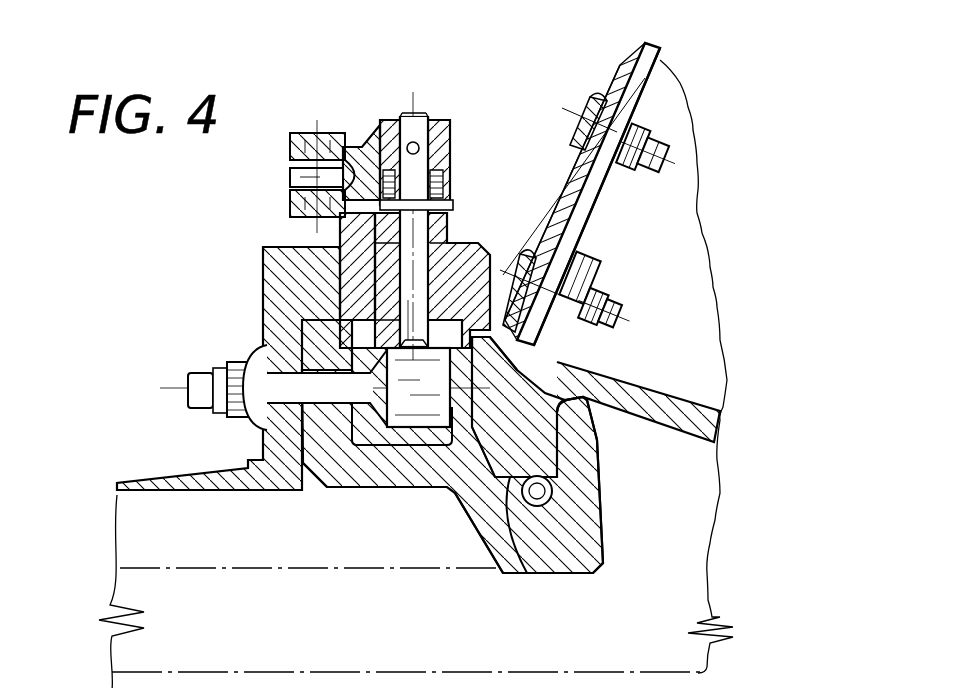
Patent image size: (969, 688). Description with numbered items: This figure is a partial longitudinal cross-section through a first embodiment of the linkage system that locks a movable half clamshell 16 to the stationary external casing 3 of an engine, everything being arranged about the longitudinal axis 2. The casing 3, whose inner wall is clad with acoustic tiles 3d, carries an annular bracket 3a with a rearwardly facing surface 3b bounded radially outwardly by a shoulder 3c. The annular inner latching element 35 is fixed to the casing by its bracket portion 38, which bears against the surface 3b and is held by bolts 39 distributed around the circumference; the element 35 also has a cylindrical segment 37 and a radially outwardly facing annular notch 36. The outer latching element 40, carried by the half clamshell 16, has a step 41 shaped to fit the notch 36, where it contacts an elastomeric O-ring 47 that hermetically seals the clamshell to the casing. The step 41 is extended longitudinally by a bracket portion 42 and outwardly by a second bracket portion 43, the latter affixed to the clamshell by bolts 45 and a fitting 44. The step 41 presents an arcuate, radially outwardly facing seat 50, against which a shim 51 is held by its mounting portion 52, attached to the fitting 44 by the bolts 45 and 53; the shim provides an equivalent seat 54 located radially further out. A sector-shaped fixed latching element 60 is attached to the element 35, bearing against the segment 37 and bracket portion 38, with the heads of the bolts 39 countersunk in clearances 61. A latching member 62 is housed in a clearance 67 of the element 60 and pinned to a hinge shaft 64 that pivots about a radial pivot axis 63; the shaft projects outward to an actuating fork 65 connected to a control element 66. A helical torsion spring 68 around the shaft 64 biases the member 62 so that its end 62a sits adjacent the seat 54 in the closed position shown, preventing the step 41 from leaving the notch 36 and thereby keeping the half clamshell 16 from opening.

The longitudinal axis 2 is at (380, 672).
The external casing 3 is at (172, 483).
The annular bracket 3a is at (272, 300).
The rearwardly facing surface 3b is at (310, 492).
The shoulder 3c is at (306, 330).
The acoustic tiles 3d is at (226, 572).
The half clamshell 16 is at (714, 224).
The inner latching element 35 is at (531, 100).
The annular notch 36 is at (525, 573).
The cylindrical segment 37 is at (450, 478).
The bracket portion 38 is at (333, 432).
The bolts 39 is at (188, 380).
The outer latching element 40 is at (701, 320).
The step 41 is at (560, 455).
The bracket portion 42 is at (703, 430).
The second bracket portion 43 is at (585, 268).
The fitting 44 is at (606, 180).
The bolts 45 is at (610, 303).
The elastomeric O-ring 47 is at (553, 492).
The seat 50 is at (548, 444).
The shim 51 is at (497, 400).
The mounting portion 52 is at (622, 80).
The bolts 53 is at (632, 160).
The seat 54 is at (517, 345).
The fixed latching element 60 is at (345, 265).
The clearances 61 is at (420, 412).
The latching member 62 is at (470, 243).
The end 62a is at (505, 257).
The pivot axis 63 is at (410, 112).
The hinge shaft 64 is at (432, 135).
The actuating fork 65 is at (372, 148).
The control element 66 is at (290, 176).
The clearance 67 is at (513, 190).
The helical torsion spring 68 is at (448, 178).